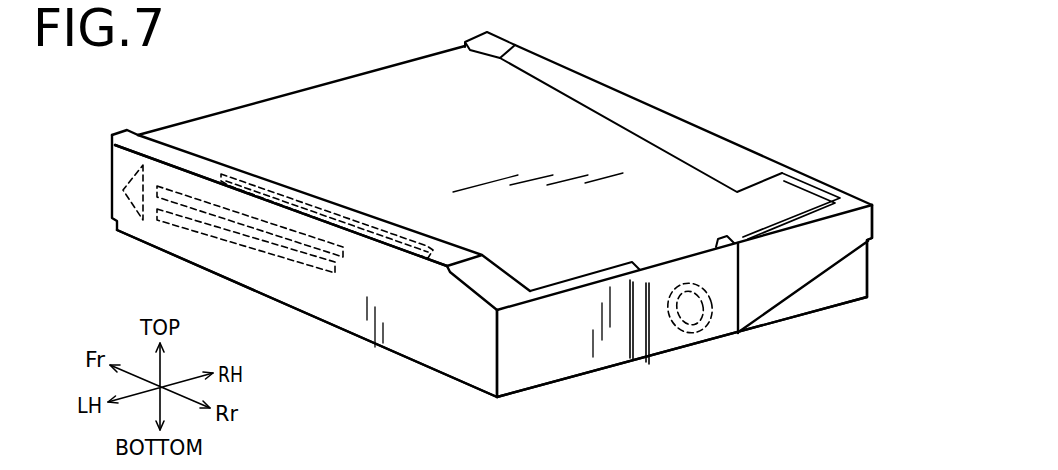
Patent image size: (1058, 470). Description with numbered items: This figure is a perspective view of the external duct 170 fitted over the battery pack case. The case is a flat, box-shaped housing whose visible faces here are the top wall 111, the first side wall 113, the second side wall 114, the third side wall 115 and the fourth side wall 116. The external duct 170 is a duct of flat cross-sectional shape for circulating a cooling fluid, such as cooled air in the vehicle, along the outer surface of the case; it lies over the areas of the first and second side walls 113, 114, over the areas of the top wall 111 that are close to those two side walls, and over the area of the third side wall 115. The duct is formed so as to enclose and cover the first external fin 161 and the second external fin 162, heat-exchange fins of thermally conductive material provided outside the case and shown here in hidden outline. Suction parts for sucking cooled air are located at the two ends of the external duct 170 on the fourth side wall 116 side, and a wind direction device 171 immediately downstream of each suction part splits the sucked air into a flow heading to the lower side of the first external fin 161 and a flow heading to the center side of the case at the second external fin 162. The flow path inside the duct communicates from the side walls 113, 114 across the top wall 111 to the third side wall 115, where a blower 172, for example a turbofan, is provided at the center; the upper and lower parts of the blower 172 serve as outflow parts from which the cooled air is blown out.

The top wall 111 is at (371, 100).
The first side wall 113 is at (318, 300).
The second side wall 114 is at (872, 258).
The third side wall 115 is at (545, 367).
The fourth side wall 116 is at (207, 122).
The first external fin 161 is at (207, 212).
The second external fin 162 is at (362, 215).
The external duct 170 is at (654, 112).
The wind direction device 171 is at (128, 171).
The blower 172 is at (697, 332).